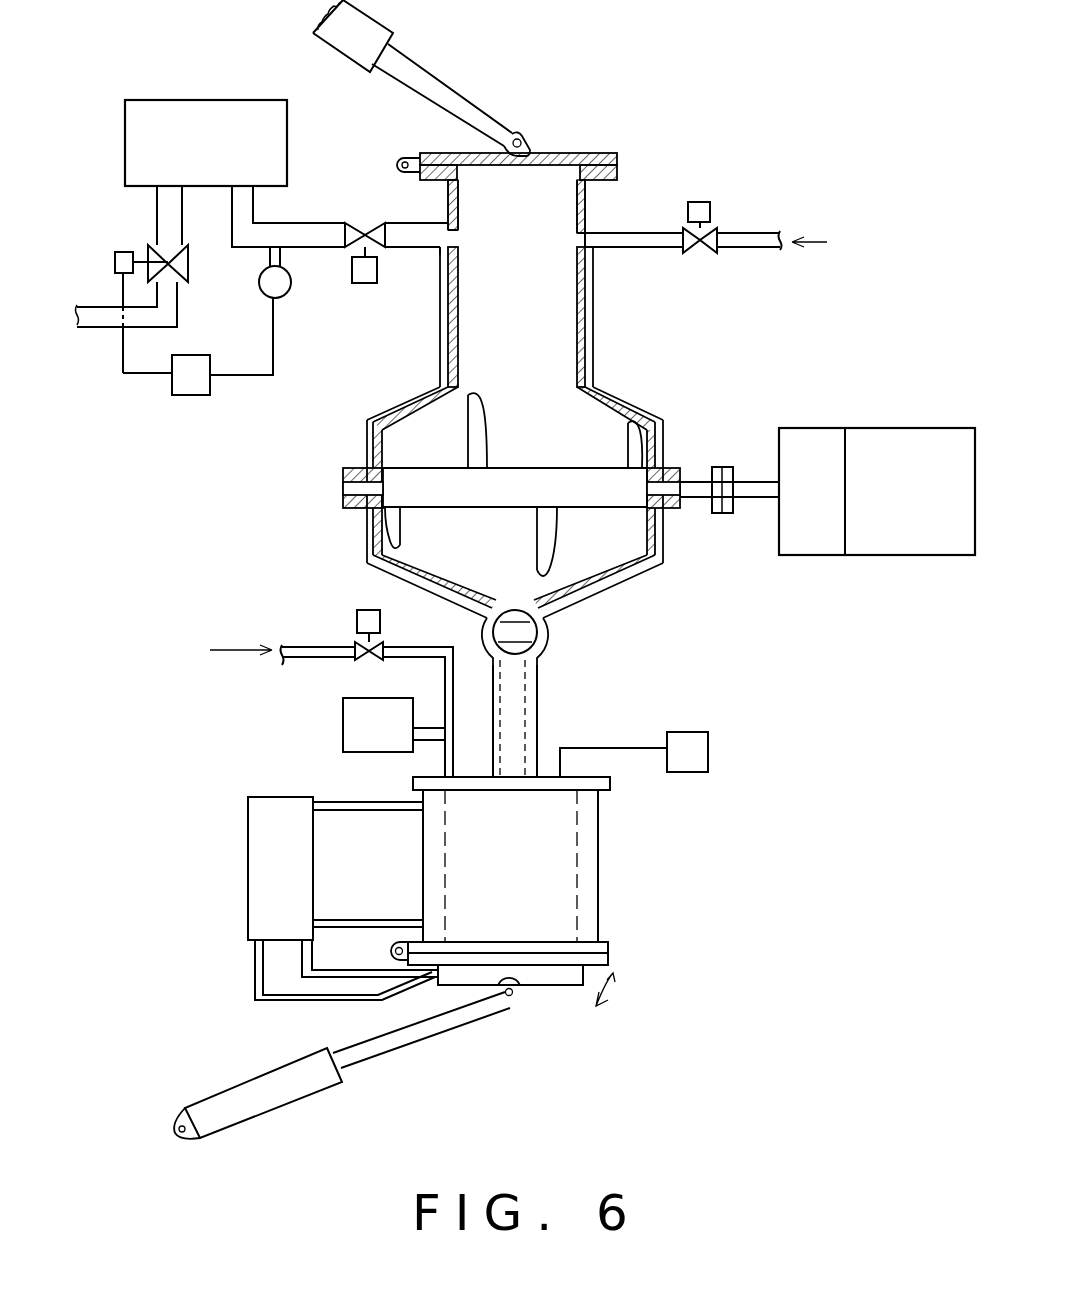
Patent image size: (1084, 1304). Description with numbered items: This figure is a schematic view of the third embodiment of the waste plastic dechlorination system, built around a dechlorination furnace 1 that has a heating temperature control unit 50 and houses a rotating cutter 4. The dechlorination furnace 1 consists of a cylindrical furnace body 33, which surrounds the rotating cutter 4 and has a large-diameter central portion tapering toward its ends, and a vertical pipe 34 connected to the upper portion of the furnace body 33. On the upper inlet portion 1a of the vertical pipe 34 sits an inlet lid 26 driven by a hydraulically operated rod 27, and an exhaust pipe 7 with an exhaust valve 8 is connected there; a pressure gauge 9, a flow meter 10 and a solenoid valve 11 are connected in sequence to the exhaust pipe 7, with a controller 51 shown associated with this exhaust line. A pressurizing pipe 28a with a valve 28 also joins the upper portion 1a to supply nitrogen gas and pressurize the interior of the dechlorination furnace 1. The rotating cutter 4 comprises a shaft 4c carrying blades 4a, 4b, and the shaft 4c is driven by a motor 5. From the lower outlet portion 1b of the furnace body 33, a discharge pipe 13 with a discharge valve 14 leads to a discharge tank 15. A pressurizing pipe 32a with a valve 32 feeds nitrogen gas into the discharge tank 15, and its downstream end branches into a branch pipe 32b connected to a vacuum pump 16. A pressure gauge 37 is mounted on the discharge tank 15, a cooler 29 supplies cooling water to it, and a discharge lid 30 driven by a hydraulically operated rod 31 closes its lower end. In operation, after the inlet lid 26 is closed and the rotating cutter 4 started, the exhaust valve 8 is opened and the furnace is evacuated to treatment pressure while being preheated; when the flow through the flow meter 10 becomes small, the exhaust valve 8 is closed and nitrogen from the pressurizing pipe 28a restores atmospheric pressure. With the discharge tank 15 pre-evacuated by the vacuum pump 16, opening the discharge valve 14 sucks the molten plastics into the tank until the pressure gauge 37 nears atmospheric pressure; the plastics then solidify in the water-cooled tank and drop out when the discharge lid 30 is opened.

The dechlorination furnace 1 is at (505, 369).
The upper portion (inlet portion) of the vertical pipe 1a is at (511, 167).
The lower discharge portion of vessel 1b is at (487, 596).
The rotating cutter 4 is at (470, 466).
The blade 4a is at (387, 527).
The blade 4b is at (468, 432).
The shaft 4c is at (479, 497).
The motor 5 is at (909, 436).
The exhaust pipe 7 is at (417, 240).
The exhaust valve 8 is at (358, 270).
The pressure gauge 9 is at (258, 282).
The flow meter 10 is at (207, 104).
The solenoid valve 11 is at (142, 250).
The discharge pipe 13 is at (534, 705).
The discharge valve 14 is at (531, 634).
The discharge tank 15 is at (560, 858).
The vacuum pump 16 is at (345, 730).
The inlet lid 26 is at (614, 151).
The hydraulically operated rod 27 is at (455, 83).
The valve 28 is at (719, 215).
The pressurizing pipe 28a is at (654, 231).
The cooler 29 is at (258, 843).
The discharge lid 30 is at (568, 976).
The hydraulically operated rod 31 is at (416, 1040).
The valve 32 is at (328, 682).
The pressurizing pipe 32a is at (320, 656).
The branch pipe 32b is at (427, 740).
The cylindrical furnace body 33 is at (370, 440).
The vertical pipe 34 is at (590, 284).
The pressure gauge 37 is at (708, 748).
The heating temperature control unit 50 is at (660, 409).
The flow controller 51 is at (190, 396).